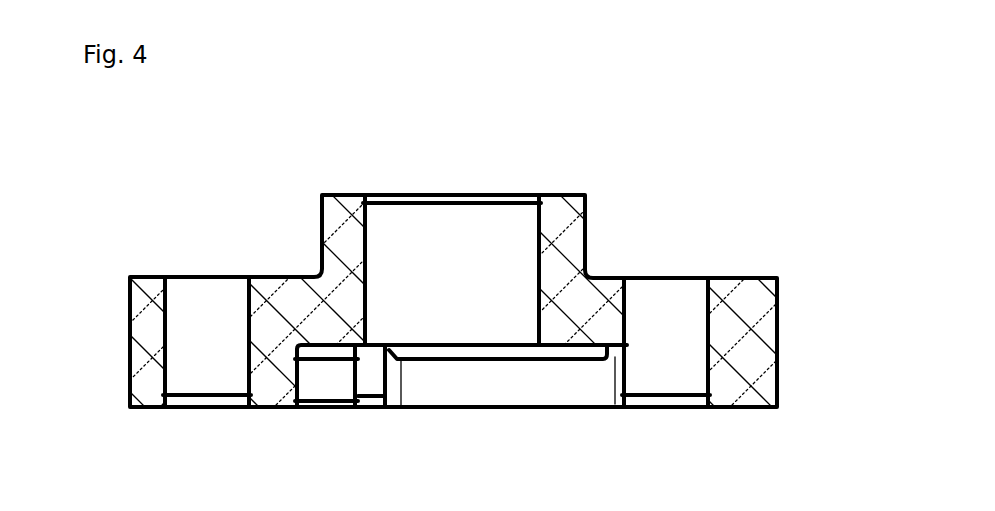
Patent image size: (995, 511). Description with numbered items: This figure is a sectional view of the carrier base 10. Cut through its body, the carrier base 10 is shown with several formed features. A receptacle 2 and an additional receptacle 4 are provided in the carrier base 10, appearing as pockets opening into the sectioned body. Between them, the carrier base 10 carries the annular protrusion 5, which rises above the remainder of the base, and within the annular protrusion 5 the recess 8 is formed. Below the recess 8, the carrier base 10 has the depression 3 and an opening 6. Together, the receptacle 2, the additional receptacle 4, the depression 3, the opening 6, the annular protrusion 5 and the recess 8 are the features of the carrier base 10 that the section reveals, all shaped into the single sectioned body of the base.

The carrier base 10 is at (760, 199).
The receptacle 2 is at (660, 328).
The depression 3 is at (330, 348).
The additional receptacle 4 is at (211, 343).
The annular protrusion 5 is at (342, 227).
The opening 6 is at (612, 348).
The recess 8 is at (458, 258).